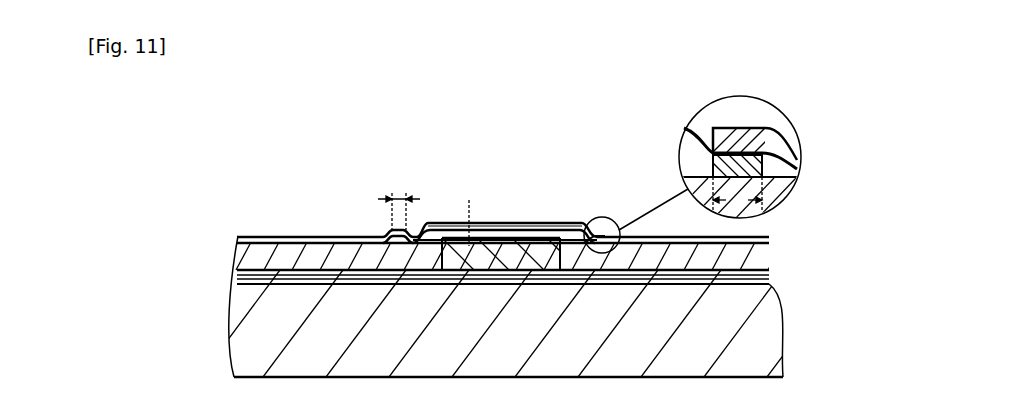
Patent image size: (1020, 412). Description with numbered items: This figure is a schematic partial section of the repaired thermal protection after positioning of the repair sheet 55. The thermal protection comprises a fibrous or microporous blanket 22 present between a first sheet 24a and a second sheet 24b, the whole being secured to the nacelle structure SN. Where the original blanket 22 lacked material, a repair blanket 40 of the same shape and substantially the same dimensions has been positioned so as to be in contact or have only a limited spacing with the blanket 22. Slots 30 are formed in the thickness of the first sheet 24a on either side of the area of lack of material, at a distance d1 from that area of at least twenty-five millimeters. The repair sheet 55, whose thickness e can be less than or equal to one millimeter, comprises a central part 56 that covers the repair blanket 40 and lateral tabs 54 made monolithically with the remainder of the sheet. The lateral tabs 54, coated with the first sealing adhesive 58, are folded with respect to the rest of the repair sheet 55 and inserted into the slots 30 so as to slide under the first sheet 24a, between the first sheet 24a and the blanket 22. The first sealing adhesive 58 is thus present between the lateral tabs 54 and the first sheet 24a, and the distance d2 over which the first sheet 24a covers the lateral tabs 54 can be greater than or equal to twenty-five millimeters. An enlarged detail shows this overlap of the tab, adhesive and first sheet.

The nacelle structure SN is at (768, 338).
The second sheet 24b is at (698, 287).
The blanket 22 is at (310, 285).
The repair blanket 40 is at (525, 283).
The slots 30 is at (440, 285).
The first sheet 24a is at (308, 236).
The lateral tabs 54 is at (417, 285).
The central part 56 is at (498, 221).
The repair sheet 55 is at (536, 216).
The first sealing adhesive 58 is at (737, 128).
The covering distance d2 is at (399, 200).
The slot distance d1 is at (737, 193).
The thickness e is at (470, 191).